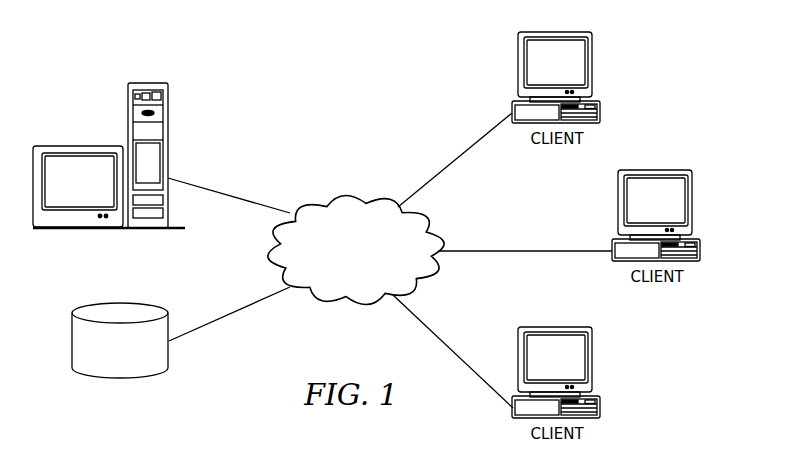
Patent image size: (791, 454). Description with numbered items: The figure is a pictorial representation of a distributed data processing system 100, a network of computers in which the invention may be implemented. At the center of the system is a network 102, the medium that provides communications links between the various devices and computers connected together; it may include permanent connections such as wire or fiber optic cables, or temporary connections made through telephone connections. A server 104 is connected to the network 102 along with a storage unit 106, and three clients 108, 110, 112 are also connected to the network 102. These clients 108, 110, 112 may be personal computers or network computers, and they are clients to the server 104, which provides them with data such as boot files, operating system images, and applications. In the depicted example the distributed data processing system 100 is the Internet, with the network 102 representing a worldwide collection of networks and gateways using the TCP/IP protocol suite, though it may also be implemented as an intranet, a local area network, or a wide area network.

The distributed data processing system 100 is at (242, 72).
The network 102 is at (340, 280).
The server 104 is at (128, 103).
The storage unit 106 is at (72, 338).
The client 108 is at (593, 72).
The client 110 is at (693, 210).
The client 112 is at (596, 368).